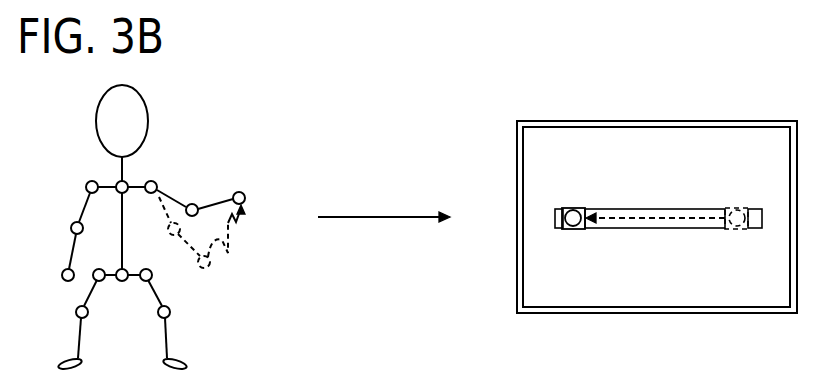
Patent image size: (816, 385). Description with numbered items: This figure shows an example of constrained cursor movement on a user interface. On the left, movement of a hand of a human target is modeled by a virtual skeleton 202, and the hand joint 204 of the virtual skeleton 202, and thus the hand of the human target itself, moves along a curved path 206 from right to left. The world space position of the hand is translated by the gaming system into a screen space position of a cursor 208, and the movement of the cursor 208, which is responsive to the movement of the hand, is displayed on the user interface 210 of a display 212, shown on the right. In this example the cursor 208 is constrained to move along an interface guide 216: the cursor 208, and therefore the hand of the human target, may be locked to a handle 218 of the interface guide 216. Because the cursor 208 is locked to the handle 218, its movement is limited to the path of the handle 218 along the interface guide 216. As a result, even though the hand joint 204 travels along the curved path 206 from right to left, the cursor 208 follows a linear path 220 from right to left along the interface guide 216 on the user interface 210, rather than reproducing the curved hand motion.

The virtual skeleton 202 is at (170, 137).
The hand joint 204 is at (240, 192).
The path 206 is at (226, 248).
The cursor 208 is at (580, 228).
The user interface 210 is at (771, 160).
The display 212 is at (738, 120).
The interface guide 216 is at (663, 208).
The handle 218 is at (568, 208).
The linear path 220 is at (648, 221).